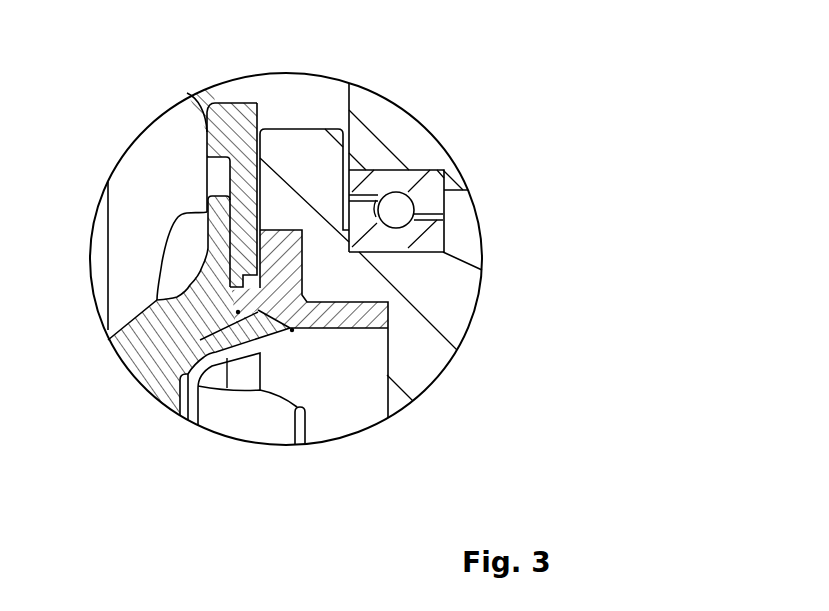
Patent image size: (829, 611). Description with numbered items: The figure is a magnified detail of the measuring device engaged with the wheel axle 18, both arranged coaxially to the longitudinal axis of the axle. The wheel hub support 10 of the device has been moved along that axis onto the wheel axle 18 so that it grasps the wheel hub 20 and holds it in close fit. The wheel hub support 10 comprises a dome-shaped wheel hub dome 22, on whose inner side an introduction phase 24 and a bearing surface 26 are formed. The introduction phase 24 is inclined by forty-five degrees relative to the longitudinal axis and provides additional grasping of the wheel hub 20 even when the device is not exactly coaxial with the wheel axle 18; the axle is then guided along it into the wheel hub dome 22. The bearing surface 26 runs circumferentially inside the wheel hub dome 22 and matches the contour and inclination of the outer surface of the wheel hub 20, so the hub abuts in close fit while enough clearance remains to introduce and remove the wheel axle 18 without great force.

The wheel hub support 10 is at (395, 141).
The wheel axle 18 is at (160, 136).
The wheel hub 20 is at (162, 378).
The wheel hub dome 22 is at (365, 315).
The introduction phase 24 is at (260, 300).
The bearing surface 26 is at (292, 330).